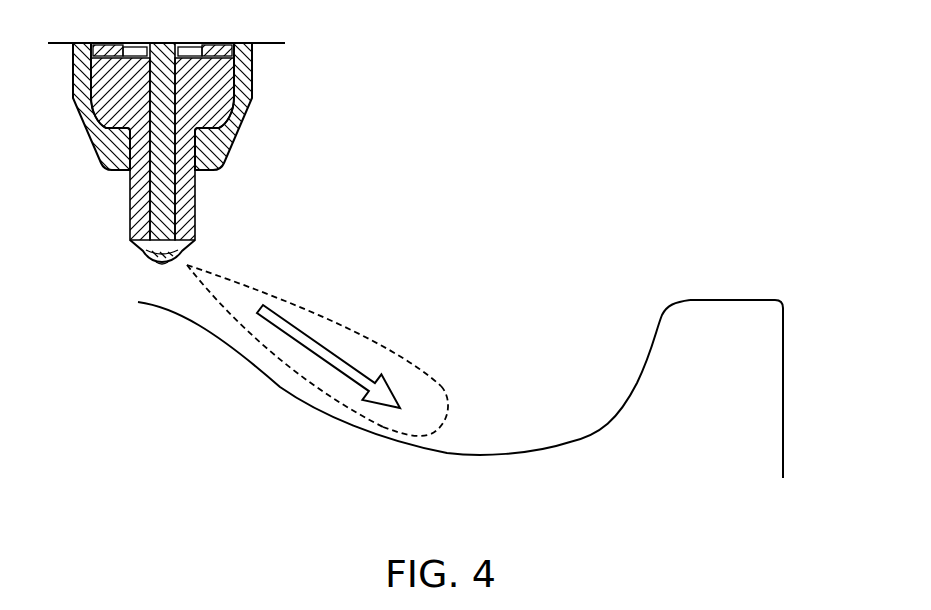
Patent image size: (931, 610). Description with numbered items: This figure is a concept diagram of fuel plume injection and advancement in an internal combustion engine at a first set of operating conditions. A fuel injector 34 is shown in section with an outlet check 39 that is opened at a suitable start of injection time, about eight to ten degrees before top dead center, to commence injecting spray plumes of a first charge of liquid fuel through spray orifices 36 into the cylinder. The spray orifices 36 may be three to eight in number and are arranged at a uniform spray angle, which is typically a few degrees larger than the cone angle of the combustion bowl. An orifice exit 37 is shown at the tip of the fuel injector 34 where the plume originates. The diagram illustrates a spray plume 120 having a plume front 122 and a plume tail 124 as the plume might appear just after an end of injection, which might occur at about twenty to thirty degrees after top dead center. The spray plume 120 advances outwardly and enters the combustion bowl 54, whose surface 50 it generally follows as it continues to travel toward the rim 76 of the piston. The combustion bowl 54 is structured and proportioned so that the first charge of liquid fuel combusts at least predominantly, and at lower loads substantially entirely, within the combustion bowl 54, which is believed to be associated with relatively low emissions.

The fuel injector 34 is at (73, 70).
The outlet check 39 is at (160, 50).
The spray orifices 36 is at (153, 256).
The nozzle orifice 37 is at (165, 263).
The spray plume 120 is at (363, 333).
The plume front 122 is at (449, 427).
The plume tail 124 is at (210, 266).
The combustion bowl 54 is at (551, 379).
The piston bowl surface 50 is at (602, 426).
The piston crown rim 76 is at (756, 290).